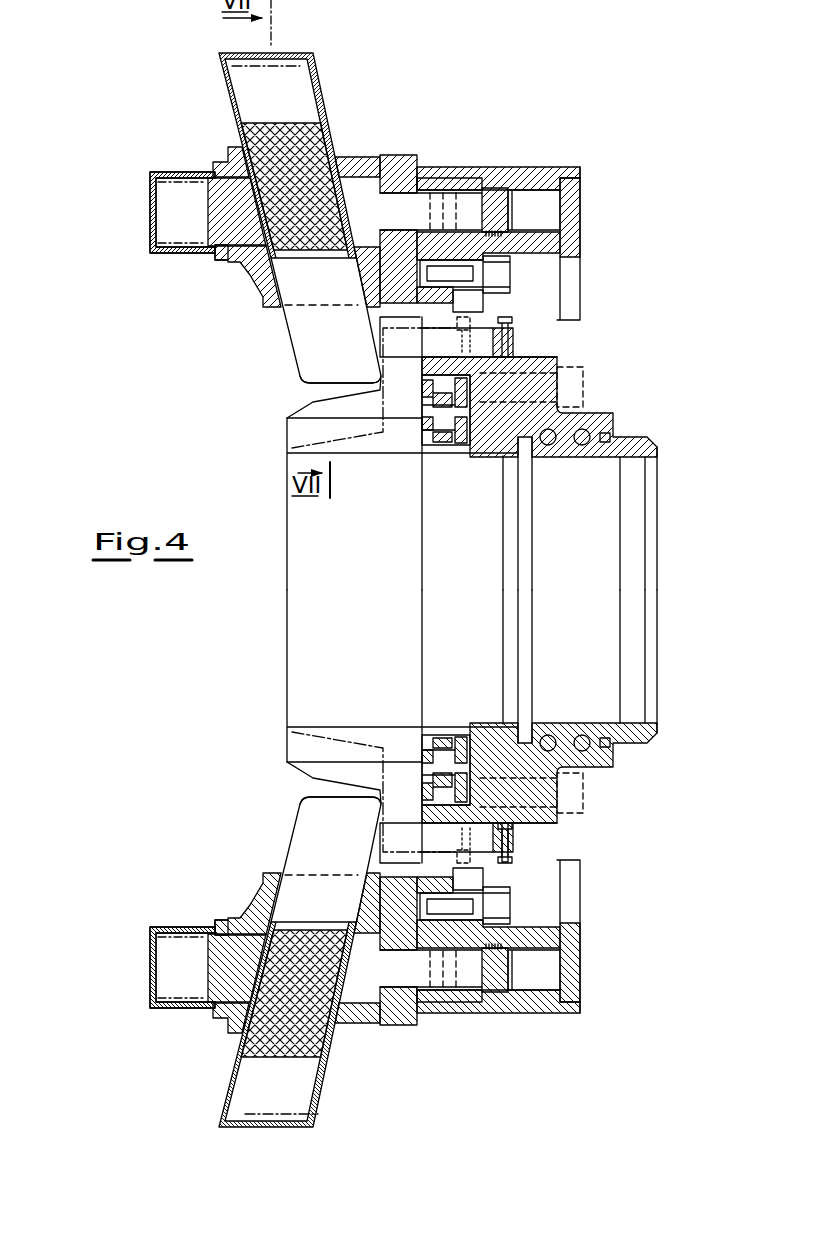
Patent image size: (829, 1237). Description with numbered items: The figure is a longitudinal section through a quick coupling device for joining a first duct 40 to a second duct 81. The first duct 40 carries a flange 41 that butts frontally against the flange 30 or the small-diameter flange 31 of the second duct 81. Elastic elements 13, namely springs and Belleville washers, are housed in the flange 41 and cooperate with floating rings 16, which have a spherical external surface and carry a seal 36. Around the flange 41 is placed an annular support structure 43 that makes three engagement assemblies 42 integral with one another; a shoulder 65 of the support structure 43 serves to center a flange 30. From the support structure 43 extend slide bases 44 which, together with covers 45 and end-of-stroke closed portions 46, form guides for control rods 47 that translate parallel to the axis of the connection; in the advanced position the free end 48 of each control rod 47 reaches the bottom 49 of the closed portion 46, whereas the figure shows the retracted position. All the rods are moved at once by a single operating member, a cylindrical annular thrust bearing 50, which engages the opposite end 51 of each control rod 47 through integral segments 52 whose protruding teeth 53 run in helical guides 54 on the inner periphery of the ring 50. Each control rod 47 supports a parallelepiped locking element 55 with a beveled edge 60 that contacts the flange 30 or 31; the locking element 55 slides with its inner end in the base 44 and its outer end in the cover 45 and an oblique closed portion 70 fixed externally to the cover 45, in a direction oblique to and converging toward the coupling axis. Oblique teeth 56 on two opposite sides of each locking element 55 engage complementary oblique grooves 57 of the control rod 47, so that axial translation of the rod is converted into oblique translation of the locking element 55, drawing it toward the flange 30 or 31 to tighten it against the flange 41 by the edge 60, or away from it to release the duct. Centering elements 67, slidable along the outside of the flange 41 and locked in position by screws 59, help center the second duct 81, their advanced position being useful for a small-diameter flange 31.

The elastic elements 13 is at (469, 442).
The floating rings 16 is at (422, 403).
The flange 30 is at (394, 340).
The flange 31 is at (373, 590).
The seal 36 is at (421, 389).
The first duct 40 is at (637, 730).
The flange 41 is at (493, 442).
The engagement assemblies 42 is at (384, 132).
The annular support structure 43 is at (401, 276).
The slide bases 44 is at (254, 278).
The covers 45 is at (358, 156).
The end-of-stroke closed portions 46 is at (179, 254).
The control rods 47 is at (398, 205).
The free end 48 is at (207, 196).
The bottom 49 is at (151, 217).
The annular thrust bearing 50 is at (545, 163).
The opposite end 51 is at (512, 211).
The integral segments 52 is at (500, 192).
The protruding teeth 53 is at (500, 170).
The helical guides 54 is at (467, 162).
The locking elements 55 is at (303, 333).
The oblique teeth 56 is at (318, 125).
The oblique grooves 57 is at (221, 262).
The screws 59 is at (504, 318).
The beveled edge 60 is at (377, 382).
The shoulder 65 is at (400, 280).
The centering elements 67 is at (488, 340).
The oblique closed portions 70 is at (289, 56).
The second duct 81 is at (276, 672).